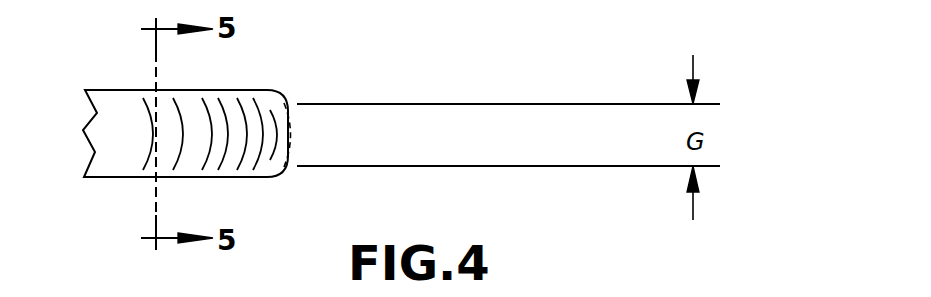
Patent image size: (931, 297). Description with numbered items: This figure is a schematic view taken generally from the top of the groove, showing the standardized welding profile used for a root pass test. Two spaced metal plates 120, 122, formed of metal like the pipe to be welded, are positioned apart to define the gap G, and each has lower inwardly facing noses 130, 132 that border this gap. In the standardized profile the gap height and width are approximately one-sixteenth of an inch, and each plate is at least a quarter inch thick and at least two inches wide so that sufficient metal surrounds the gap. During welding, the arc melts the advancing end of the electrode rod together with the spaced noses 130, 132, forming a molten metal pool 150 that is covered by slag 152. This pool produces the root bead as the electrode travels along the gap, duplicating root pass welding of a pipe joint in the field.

The metal plate 120 is at (433, 82).
The metal plate 122 is at (553, 175).
The nose 130 is at (448, 105).
The nose 132 is at (420, 166).
The molten metal pool 150 is at (304, 128).
The slag 152 is at (201, 118).